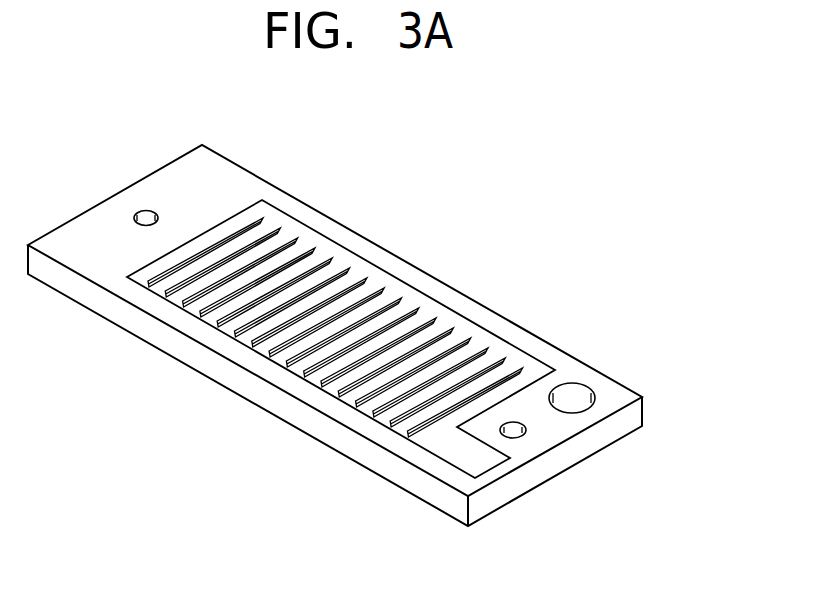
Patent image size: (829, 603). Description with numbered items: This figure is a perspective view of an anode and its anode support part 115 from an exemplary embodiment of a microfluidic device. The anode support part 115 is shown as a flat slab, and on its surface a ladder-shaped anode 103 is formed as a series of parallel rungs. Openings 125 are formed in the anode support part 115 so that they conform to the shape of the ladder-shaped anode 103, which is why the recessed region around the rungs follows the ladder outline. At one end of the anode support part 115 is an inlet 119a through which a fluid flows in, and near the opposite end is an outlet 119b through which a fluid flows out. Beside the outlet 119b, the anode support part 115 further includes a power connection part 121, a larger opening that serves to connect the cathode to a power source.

The ladder-shaped anode 103 is at (413, 298).
The anode support part 115 is at (503, 497).
The inlet 119a is at (146, 211).
The outlet 119b is at (527, 432).
The power connection part 121 is at (588, 385).
The openings 125 is at (475, 350).